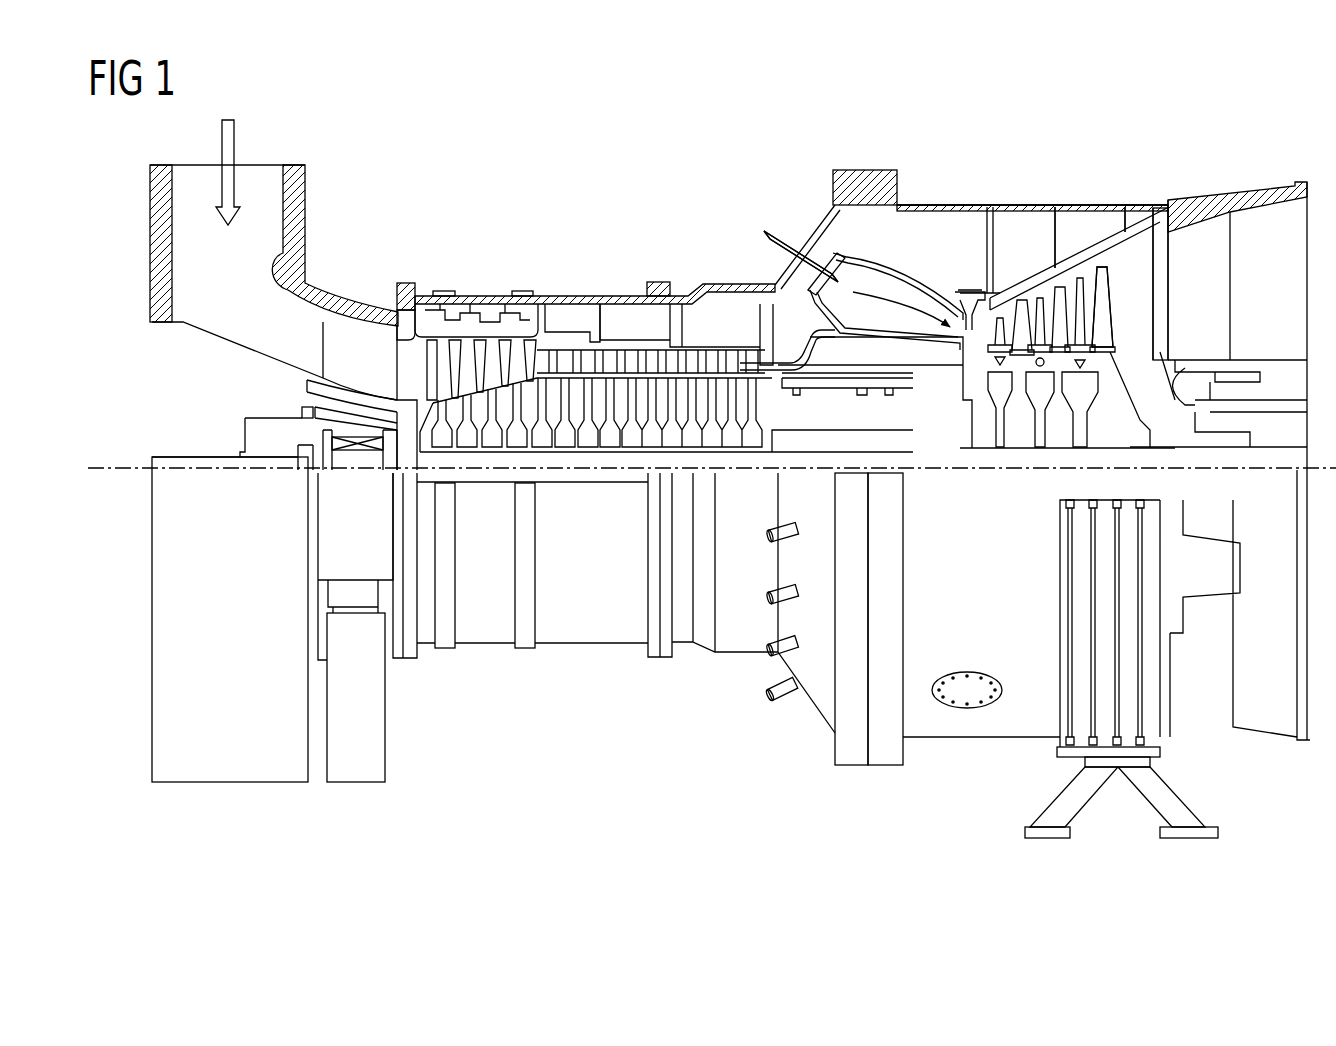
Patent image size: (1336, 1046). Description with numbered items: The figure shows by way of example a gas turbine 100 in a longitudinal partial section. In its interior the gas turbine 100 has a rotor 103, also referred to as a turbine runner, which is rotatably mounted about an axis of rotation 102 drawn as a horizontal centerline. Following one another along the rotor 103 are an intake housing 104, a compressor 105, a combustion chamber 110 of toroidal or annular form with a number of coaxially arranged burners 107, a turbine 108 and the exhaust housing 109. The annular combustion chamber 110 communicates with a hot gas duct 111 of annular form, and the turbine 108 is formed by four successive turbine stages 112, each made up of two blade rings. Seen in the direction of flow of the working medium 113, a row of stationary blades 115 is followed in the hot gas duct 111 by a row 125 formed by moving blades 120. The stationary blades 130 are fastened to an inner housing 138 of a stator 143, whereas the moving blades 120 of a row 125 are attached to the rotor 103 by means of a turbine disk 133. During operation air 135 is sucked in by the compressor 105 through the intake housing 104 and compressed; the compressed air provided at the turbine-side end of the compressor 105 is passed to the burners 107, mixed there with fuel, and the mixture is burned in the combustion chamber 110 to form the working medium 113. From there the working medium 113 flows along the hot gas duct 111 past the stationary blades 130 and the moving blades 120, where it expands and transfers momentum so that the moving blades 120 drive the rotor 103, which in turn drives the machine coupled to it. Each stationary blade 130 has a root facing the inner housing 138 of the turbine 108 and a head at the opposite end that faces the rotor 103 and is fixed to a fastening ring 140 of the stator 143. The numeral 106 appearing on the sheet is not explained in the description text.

The gas turbine 100 is at (594, 163).
The axis of rotation 102 is at (125, 466).
The rotor 103 is at (845, 432).
The intake housing 104 is at (308, 208).
The compressor 105 is at (492, 272).
The combustion chamber 106 is at (938, 292).
The burner 107 is at (773, 243).
The turbine 108 is at (971, 157).
The exhaust housing 109 is at (1210, 205).
The combustion chamber 110 is at (860, 272).
The hot gas duct 111 is at (1140, 273).
The turbine stage 112 is at (1115, 155).
The working medium 113 is at (862, 303).
The stationary blades 115 is at (1086, 236).
The moving blade 120 is at (1022, 335).
The row of moving blades 125 is at (1143, 216).
The stationary blade 130 is at (1003, 343).
The turbine disk 133 is at (1135, 427).
The air 135 is at (244, 146).
The inner housing 138 is at (1021, 236).
The fastening ring 140 is at (962, 332).
The stator 143 is at (938, 203).